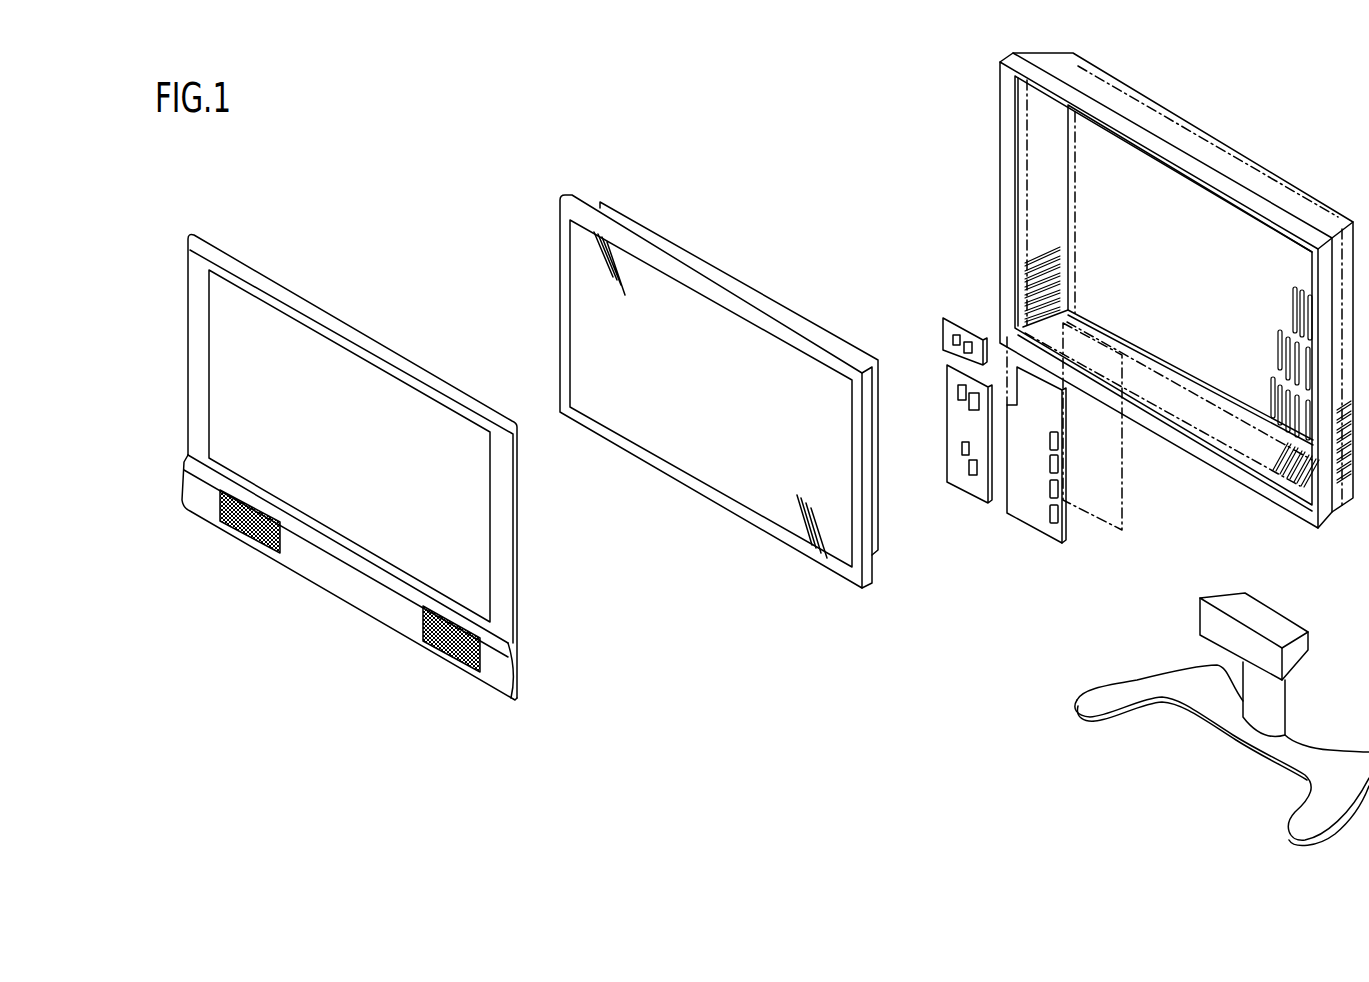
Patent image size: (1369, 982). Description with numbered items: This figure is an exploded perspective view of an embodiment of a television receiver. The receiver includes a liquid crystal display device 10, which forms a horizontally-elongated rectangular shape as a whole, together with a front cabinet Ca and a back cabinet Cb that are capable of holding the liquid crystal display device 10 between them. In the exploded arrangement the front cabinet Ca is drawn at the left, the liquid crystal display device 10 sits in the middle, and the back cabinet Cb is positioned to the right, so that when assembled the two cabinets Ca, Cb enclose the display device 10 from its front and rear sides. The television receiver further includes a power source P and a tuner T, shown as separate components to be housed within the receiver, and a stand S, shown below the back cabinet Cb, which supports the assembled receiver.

The front cabinet Ca is at (338, 320).
The liquid crystal display device 10 is at (663, 235).
The back cabinet Cb is at (1170, 128).
The tuner T is at (962, 488).
The power source P is at (1028, 527).
The stand S is at (1138, 708).